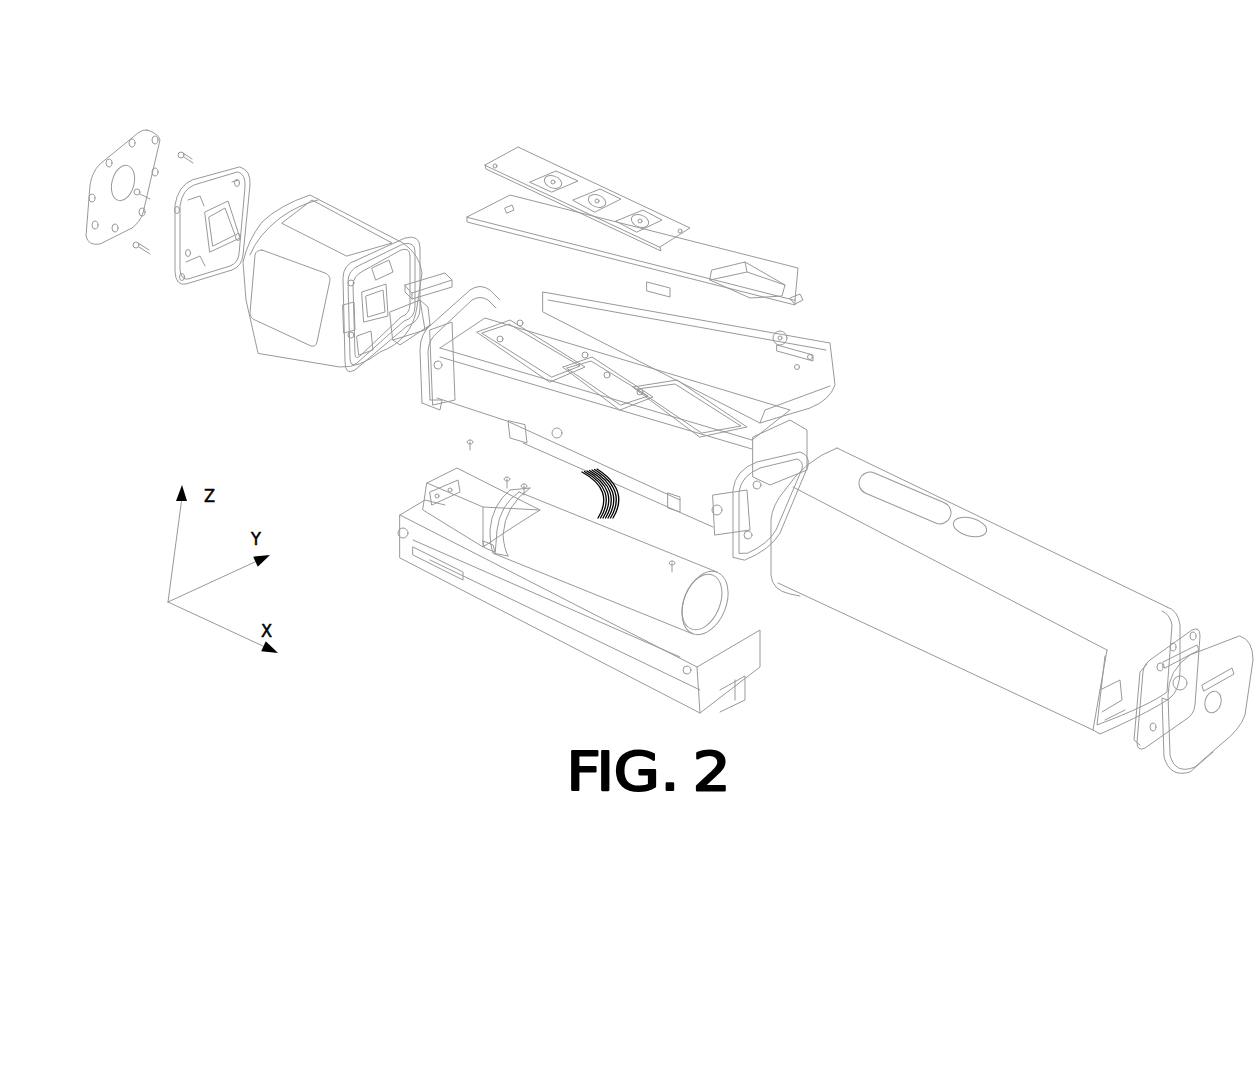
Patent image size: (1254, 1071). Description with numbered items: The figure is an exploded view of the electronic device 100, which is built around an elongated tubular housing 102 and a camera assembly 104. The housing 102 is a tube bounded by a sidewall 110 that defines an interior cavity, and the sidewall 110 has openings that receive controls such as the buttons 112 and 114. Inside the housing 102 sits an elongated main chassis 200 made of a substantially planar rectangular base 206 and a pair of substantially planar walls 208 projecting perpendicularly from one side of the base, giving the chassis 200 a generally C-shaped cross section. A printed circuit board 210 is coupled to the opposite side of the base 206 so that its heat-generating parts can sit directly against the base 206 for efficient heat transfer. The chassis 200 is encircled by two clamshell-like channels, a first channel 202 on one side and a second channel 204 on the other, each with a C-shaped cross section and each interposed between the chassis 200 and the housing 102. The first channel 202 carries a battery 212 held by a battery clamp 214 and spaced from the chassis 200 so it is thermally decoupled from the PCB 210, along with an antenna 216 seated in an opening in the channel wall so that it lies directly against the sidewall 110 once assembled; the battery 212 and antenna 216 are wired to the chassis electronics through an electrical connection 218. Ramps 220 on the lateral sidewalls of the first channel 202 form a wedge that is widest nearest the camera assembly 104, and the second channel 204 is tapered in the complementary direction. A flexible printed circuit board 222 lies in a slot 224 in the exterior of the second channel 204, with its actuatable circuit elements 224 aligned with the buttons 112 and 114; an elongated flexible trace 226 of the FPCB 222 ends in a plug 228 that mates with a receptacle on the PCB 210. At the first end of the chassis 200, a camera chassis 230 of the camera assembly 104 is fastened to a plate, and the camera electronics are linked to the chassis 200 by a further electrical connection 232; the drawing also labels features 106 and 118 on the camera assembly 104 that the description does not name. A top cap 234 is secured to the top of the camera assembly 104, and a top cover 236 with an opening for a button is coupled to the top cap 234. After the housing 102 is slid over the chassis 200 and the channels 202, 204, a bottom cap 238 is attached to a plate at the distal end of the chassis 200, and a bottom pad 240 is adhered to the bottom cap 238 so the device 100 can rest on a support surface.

The electronic device 100 is at (836, 149).
The elongated tubular housing 102 is at (910, 689).
The camera assembly 104 is at (350, 176).
The head housing 106 is at (342, 225).
The sidewall 110 is at (1048, 562).
The button 112 is at (898, 500).
The button 114 is at (972, 528).
The window 118 is at (242, 310).
The chassis 200 is at (809, 421).
The first channel 202 is at (491, 635).
The second channel 204 is at (838, 323).
The substantially planar rectangular base 206 is at (492, 372).
The pair of substantially planar walls 208 is at (521, 411).
The printed circuit board 210 is at (523, 327).
The battery 212 is at (710, 608).
The battery clamp 214 is at (613, 547).
The antenna 216 is at (429, 516).
The electrical connection 218 is at (588, 497).
The ramps 220 is at (650, 660).
The flexible printed circuit board 222 is at (528, 165).
The slot 224 is at (648, 218).
The elongated flexible trace 226 is at (730, 263).
The plug 228 is at (806, 301).
The camera chassis 230 is at (343, 348).
The electrical connection 232 is at (445, 283).
The top cap 234 is at (237, 167).
The top cover 236 is at (148, 127).
The bottom cap 238 is at (1138, 747).
The bottom pad 240 is at (1178, 767).